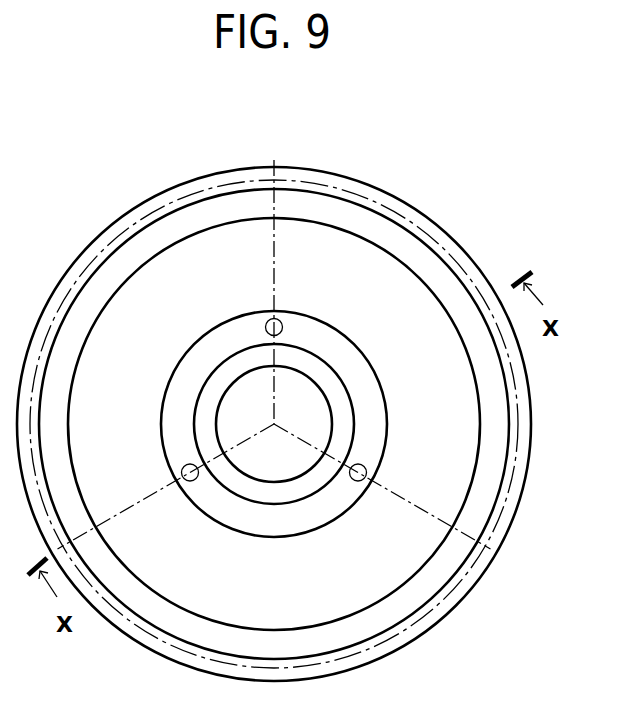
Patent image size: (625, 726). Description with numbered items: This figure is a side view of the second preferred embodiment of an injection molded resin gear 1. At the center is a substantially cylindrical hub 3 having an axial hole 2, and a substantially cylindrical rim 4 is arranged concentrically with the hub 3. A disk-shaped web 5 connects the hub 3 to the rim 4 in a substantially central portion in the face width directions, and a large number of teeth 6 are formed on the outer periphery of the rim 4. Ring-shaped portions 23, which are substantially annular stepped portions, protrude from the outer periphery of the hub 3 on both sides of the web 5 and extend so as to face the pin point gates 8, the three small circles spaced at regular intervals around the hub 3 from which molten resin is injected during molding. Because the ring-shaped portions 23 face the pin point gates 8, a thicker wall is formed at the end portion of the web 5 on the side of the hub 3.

The injection molded resin gear 1 is at (425, 216).
The axial hole 2 is at (299, 381).
The hub 3 is at (287, 493).
The rim 4 is at (487, 351).
The web 5 is at (460, 423).
The teeth 6 is at (518, 507).
The pin point gates 8 is at (266, 331).
The ring-shaped portions 23 is at (318, 333).